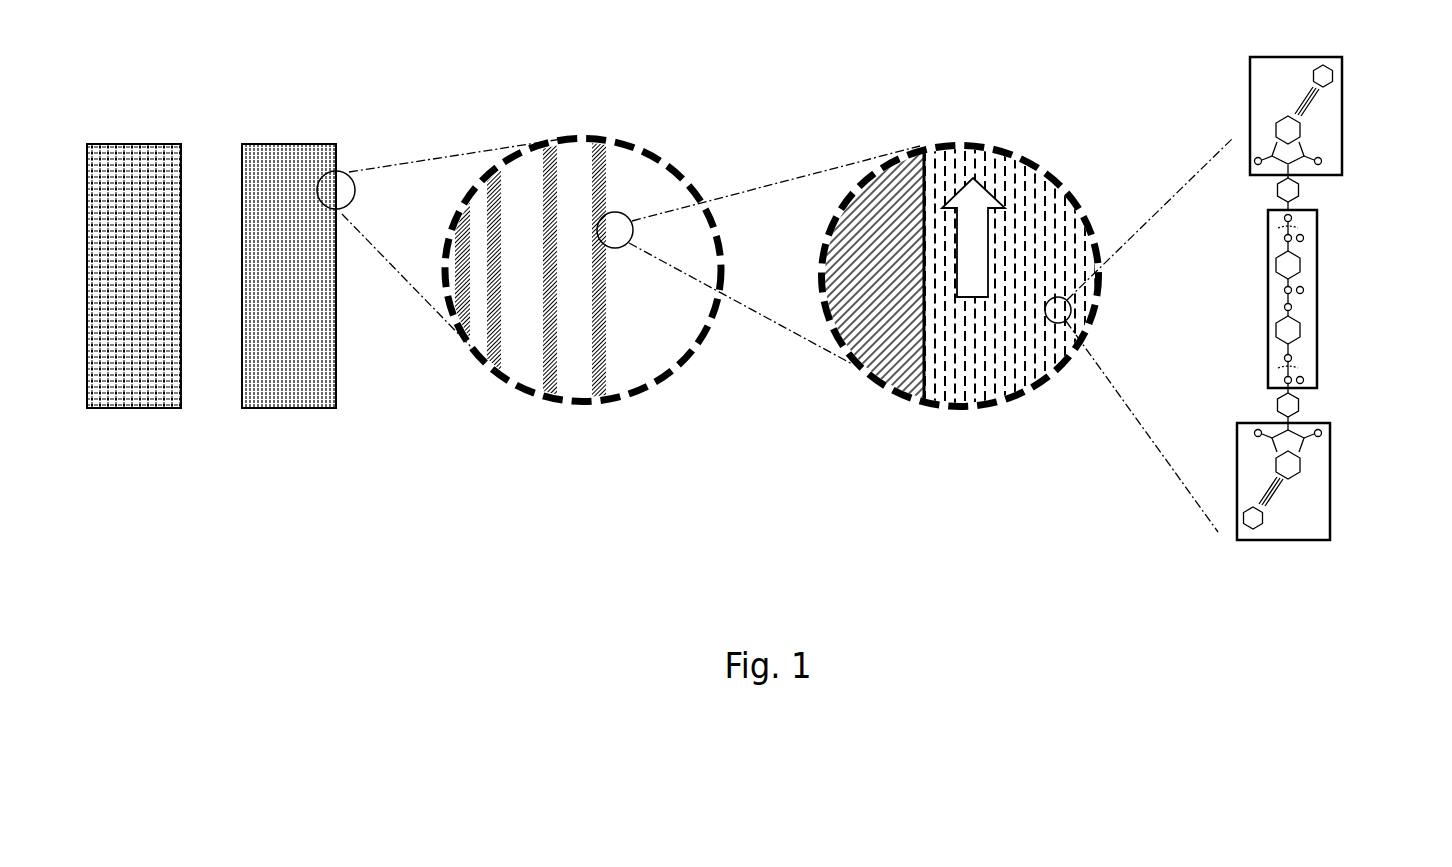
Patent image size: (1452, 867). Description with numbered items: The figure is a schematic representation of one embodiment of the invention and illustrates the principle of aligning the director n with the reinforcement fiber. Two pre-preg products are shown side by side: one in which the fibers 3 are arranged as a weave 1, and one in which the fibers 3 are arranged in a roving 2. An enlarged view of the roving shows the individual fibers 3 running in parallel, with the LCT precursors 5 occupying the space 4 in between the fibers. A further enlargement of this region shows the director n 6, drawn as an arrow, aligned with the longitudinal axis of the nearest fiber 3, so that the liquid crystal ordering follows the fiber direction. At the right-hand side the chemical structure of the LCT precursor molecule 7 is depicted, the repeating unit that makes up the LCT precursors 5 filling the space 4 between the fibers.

The weave 1 is at (135, 412).
The roving 2 is at (292, 412).
The fibers 3 is at (610, 366).
The space 4 is at (645, 300).
The LCT precursors 5 is at (985, 330).
The director n 6 is at (990, 238).
The polymer molecule 7 is at (1332, 376).